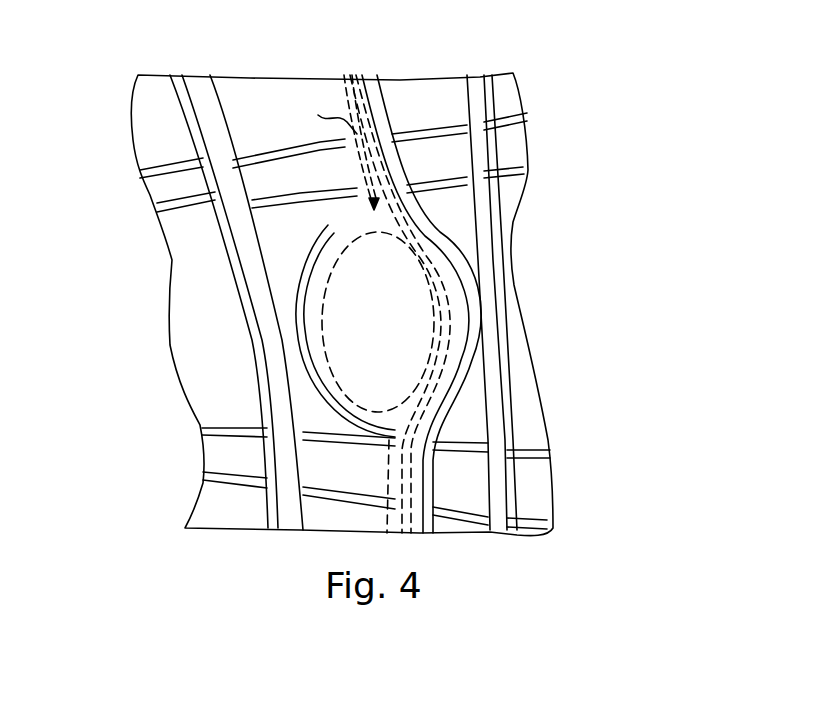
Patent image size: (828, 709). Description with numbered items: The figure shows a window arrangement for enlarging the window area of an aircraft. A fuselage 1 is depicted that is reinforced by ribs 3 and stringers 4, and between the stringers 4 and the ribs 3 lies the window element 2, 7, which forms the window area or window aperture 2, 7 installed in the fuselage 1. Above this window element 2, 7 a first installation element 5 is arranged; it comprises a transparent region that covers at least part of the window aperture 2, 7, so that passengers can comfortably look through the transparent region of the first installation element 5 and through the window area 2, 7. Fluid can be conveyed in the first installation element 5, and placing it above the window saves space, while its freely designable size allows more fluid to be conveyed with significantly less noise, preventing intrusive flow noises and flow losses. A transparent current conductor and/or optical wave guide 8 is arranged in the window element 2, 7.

The fuselage 1 is at (567, 275).
The window element 2 is at (350, 316).
The ribs 3 is at (527, 397).
The stringers 4 is at (543, 113).
The first installation element 5 is at (328, 223).
The window aperture 7 is at (350, 316).
The transparent current conductor and/or optical wave guide 8 is at (366, 92).